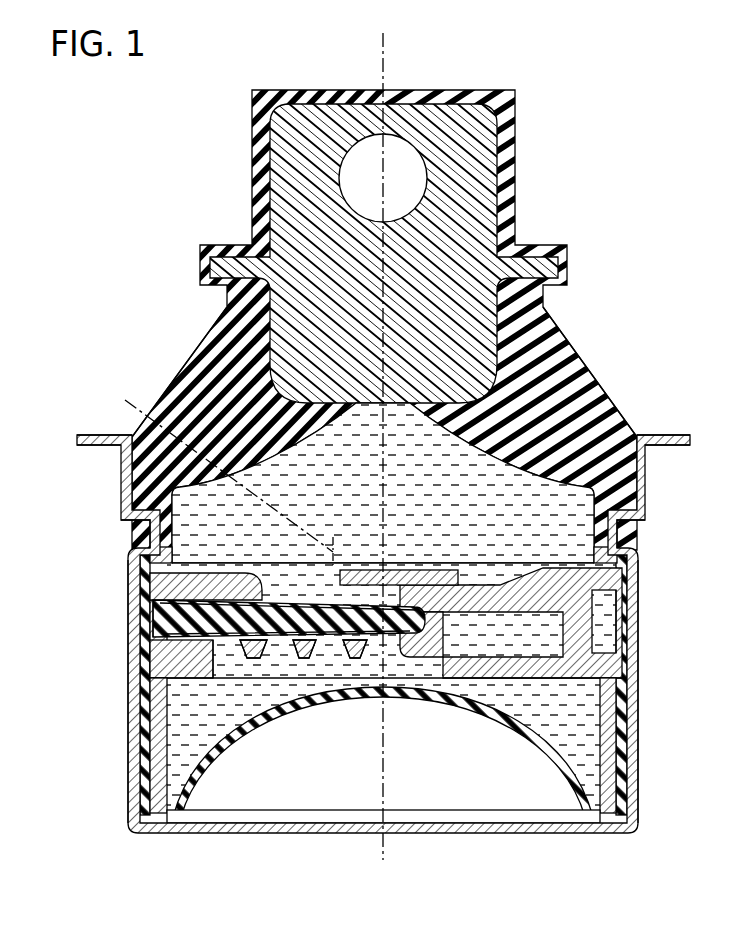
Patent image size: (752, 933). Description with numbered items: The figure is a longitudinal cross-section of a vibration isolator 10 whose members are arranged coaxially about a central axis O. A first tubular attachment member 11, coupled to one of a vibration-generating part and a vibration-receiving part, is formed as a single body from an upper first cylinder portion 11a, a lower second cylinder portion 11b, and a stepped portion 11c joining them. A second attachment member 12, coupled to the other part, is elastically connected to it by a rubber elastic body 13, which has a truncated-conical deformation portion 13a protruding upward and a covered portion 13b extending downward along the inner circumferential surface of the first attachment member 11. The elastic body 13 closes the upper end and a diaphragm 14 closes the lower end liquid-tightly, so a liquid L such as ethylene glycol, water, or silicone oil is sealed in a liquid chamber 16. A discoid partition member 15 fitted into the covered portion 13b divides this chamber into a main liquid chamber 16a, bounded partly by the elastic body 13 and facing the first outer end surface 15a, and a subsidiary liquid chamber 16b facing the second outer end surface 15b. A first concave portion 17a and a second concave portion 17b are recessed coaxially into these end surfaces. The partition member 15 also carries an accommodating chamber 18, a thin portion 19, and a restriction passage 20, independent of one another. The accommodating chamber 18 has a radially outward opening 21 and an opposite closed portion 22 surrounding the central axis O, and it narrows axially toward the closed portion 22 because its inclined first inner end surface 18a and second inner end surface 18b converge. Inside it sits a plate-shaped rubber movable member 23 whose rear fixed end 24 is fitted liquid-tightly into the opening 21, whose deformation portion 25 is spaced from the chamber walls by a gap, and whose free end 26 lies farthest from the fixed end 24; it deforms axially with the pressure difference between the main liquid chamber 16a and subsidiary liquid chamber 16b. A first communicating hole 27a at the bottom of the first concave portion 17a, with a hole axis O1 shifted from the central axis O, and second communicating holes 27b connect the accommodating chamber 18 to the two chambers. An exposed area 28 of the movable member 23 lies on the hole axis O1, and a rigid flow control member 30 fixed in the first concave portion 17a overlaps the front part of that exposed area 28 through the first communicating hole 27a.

The vibration isolator 10 is at (577, 105).
The first tubular attachment member 11 is at (645, 473).
The first cylinder portion 11a is at (121, 478).
The second cylinder portion 11b is at (130, 777).
The stepped portion 11c is at (147, 533).
The second attachment member 12 is at (495, 172).
The elastic body 13 is at (580, 362).
The deformation portion 13a is at (212, 338).
The covered portion 13b is at (143, 693).
The diaphragm 14 is at (238, 770).
The partition member 15 is at (618, 575).
The first outer end surface 15a is at (580, 563).
The second outer end surface 15b is at (600, 701).
The liquid chamber 16 is at (286, 481).
The main liquid chamber 16a is at (409, 508).
The subsidiary liquid chamber 16b is at (536, 724).
The first concave portion 17a is at (507, 585).
The second concave portion 17b is at (452, 660).
The accommodating chamber 18 is at (185, 668).
The first inner end surface 18a is at (258, 660).
The second inner end surface 18b is at (301, 660).
The thin portion 19 is at (592, 625).
The restriction passage 20 is at (607, 648).
The opening 21 is at (177, 613).
The closed portion 22 is at (417, 655).
The movable member 23 is at (177, 703).
The fixed end 24 is at (177, 620).
The deformation portion 25 is at (290, 660).
The free end 26 is at (440, 625).
The first communicating hole 27a is at (177, 576).
The second communicating holes 27b is at (352, 660).
The exposed area 28 is at (177, 548).
The flow control member 30 is at (500, 622).
The liquid L is at (587, 765).
The central axis O is at (383, 58).
The hole axis O1 is at (208, 470).